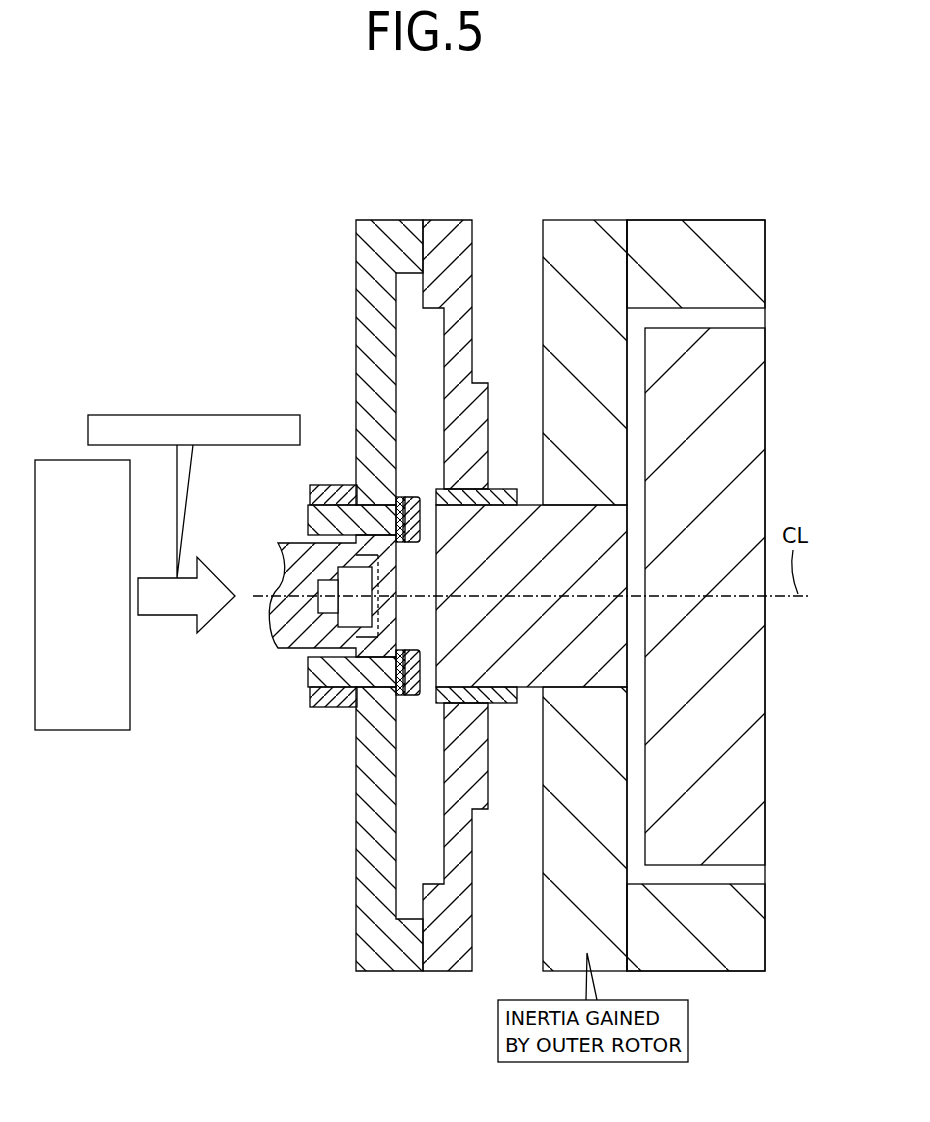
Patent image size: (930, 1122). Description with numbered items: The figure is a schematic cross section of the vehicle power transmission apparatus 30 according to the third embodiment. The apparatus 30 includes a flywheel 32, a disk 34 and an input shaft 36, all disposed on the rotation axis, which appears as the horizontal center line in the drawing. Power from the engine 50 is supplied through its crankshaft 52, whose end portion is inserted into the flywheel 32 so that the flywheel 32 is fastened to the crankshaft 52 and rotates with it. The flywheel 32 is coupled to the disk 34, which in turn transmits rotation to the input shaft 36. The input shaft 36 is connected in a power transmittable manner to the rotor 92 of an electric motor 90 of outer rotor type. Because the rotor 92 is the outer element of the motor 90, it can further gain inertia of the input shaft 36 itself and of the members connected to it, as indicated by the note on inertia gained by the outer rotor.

The vehicle power transmission apparatus 30 is at (608, 113).
The flywheel 32 is at (382, 198).
The disk 34 is at (453, 198).
The input shaft 36 is at (529, 500).
The engine 50 is at (58, 720).
The crankshaft 52 is at (283, 518).
The electric motor 90 is at (693, 198).
The rotor 92 is at (708, 220).